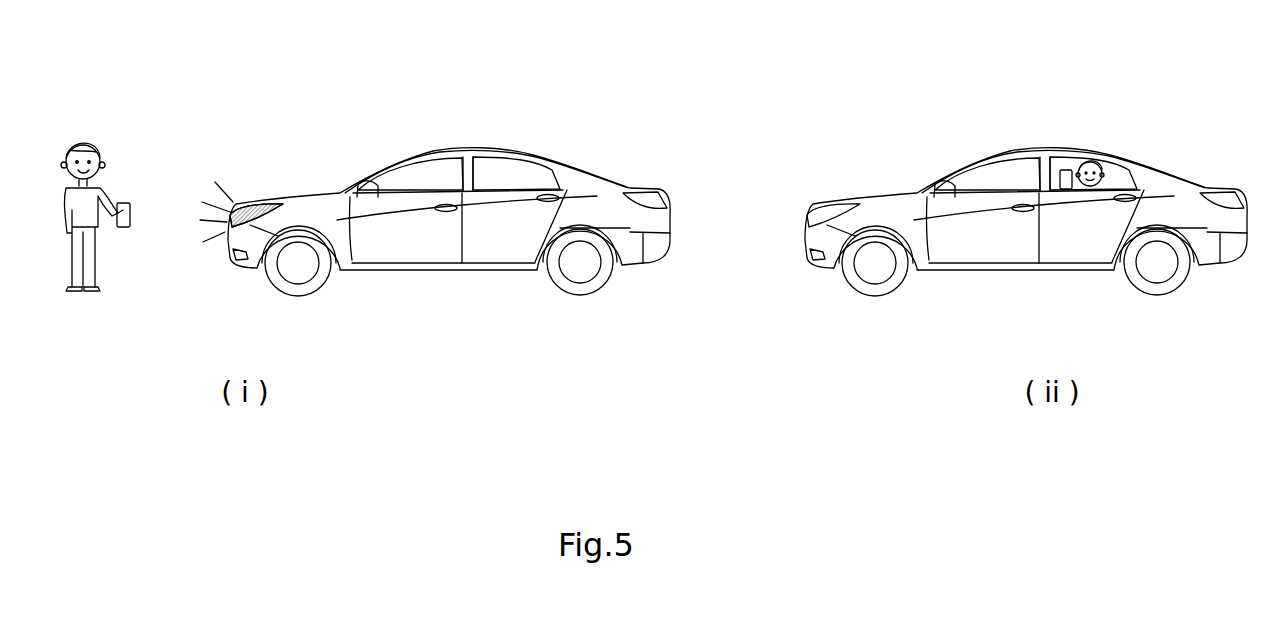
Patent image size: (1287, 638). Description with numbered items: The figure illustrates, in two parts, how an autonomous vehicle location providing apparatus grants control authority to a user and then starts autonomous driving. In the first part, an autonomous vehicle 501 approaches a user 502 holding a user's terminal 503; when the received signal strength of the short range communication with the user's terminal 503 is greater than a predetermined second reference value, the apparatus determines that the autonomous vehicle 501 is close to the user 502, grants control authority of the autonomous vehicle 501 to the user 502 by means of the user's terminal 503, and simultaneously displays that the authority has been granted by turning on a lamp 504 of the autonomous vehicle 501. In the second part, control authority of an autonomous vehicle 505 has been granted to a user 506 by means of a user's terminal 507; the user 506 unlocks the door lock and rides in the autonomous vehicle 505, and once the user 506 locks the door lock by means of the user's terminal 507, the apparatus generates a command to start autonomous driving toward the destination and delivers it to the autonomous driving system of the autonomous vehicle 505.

The autonomous vehicle 501 is at (478, 148).
The user 502 is at (84, 142).
The user's terminal 503 is at (124, 203).
The lamp 504 is at (252, 203).
The autonomous vehicle 505 is at (876, 193).
The user 506 is at (1092, 163).
The user's terminal 507 is at (1064, 169).